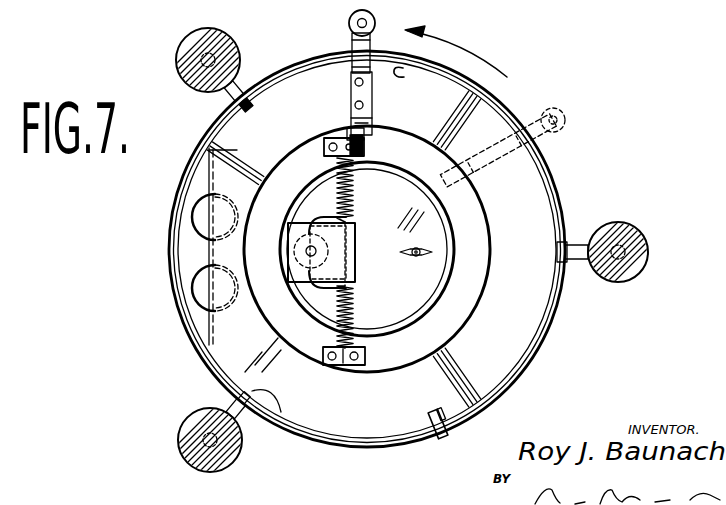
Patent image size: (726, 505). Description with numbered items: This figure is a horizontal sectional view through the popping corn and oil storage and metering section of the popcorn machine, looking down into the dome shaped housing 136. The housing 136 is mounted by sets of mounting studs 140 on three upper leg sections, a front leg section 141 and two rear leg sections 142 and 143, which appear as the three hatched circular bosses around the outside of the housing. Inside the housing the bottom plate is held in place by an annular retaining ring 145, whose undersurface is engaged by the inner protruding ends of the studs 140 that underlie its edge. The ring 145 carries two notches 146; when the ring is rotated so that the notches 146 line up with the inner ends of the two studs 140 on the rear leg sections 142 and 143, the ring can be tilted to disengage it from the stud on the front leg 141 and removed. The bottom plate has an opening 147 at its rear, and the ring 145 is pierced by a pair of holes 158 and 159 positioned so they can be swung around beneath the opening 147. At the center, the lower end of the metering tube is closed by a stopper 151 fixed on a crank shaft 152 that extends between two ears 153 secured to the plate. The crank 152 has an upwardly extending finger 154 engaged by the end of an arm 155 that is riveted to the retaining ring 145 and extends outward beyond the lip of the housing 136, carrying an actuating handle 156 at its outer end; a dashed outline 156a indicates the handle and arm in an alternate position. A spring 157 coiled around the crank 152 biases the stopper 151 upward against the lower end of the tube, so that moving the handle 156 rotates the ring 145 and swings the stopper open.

The dome shaped housing 136 is at (557, 180).
The mounting studs 140 is at (257, 108).
The upper leg section 141 is at (649, 256).
The upper leg section 142 is at (177, 56).
The upper leg section 143 is at (178, 445).
The annular retaining ring 145 is at (460, 75).
The notches 146 is at (405, 76).
The opening 147 is at (192, 258).
The stopper 151 is at (350, 230).
The crank shaft 152 is at (350, 291).
The ears 153 is at (327, 151).
The finger 154 is at (348, 135).
The arm 155 is at (372, 100).
The actuating handle 156 is at (349, 24).
The lever in alternate position 156a is at (565, 125).
The spring 157 is at (353, 197).
The hole 158 is at (194, 219).
The hole 159 is at (195, 300).